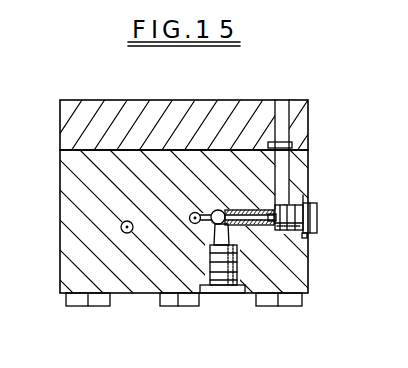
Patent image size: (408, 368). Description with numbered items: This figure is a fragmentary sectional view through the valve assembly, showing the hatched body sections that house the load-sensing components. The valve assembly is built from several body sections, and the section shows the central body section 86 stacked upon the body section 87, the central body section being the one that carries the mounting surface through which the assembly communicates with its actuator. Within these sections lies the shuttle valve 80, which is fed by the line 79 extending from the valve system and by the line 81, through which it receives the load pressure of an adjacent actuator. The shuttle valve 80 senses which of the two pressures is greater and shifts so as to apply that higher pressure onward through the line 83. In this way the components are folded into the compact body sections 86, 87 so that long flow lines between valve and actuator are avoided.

The line 79 is at (283, 124).
The shuttle valve 80 is at (220, 210).
The line 81 is at (229, 281).
The line 83 is at (196, 224).
The central body section 86 is at (72, 118).
The body section 87 is at (67, 183).